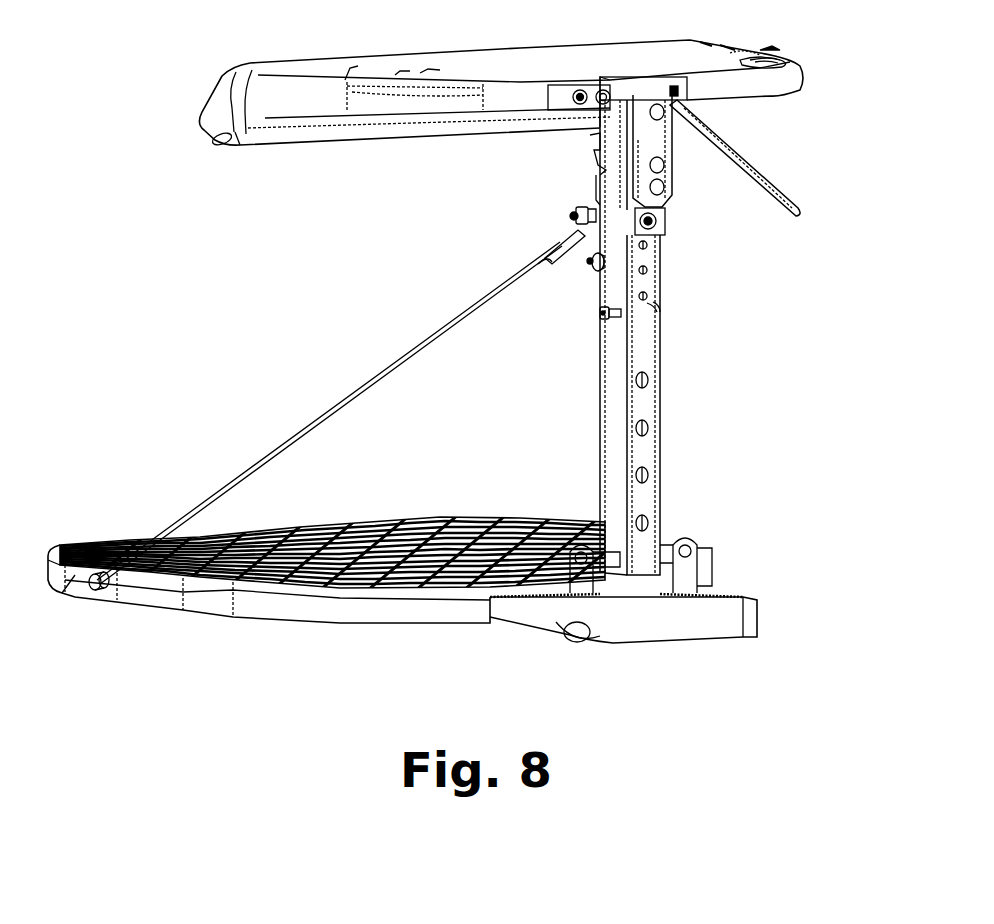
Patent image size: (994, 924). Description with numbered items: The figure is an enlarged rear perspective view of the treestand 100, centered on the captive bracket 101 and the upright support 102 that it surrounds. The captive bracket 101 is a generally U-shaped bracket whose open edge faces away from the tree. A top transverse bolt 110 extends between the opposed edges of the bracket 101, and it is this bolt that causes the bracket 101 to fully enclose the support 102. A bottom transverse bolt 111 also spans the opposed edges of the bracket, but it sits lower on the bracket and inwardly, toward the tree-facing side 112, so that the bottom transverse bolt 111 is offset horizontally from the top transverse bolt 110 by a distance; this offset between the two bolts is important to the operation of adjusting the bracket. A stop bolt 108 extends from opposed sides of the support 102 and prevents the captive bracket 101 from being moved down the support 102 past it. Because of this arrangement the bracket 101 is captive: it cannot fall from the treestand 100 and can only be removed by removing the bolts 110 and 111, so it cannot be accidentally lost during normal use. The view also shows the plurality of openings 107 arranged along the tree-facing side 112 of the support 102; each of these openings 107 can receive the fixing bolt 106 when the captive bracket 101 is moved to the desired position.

The treestand 100 is at (146, 33).
The captive bracket 101 is at (601, 205).
The support 102 is at (690, 400).
The fixing bolt 106 is at (652, 224).
The plurality of openings 107 is at (648, 296).
The stop bolt 108 is at (603, 320).
The top transverse bolt 110 is at (572, 214).
The bottom transverse bolt 111 is at (592, 266).
The tree-facing side 112 is at (649, 306).